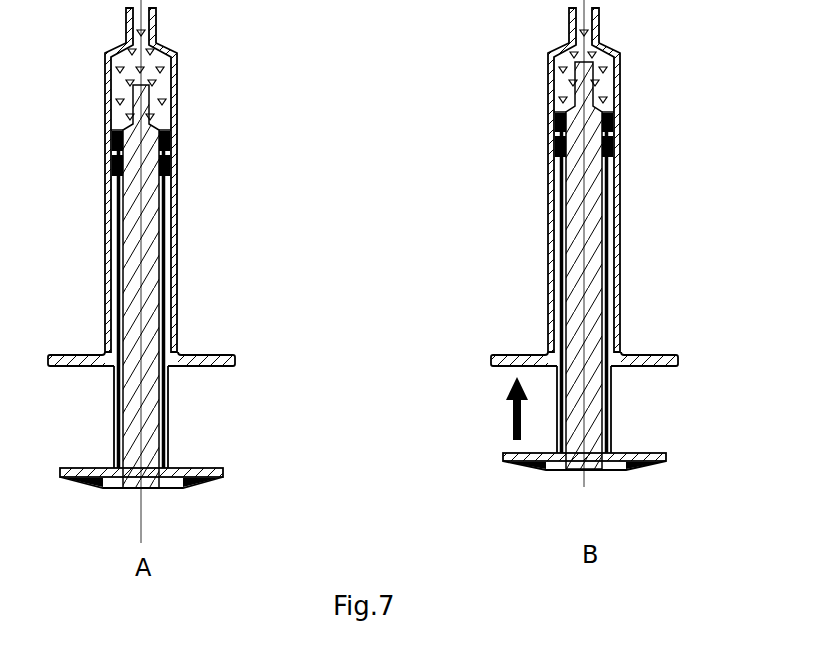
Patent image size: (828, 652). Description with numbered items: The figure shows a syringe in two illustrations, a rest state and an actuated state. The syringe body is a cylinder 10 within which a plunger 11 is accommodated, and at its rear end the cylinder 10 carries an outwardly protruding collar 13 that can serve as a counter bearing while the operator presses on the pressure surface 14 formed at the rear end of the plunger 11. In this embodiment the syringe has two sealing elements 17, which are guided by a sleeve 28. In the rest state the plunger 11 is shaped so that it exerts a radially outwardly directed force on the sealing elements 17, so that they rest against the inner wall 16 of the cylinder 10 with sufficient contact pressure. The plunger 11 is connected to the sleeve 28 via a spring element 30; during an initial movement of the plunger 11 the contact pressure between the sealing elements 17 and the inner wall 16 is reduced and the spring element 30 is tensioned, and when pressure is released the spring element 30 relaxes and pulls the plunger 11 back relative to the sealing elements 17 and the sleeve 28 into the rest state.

The cylinder 10 is at (178, 227).
The plunger 11 is at (152, 288).
The collar 13 is at (233, 354).
The pressure surface 14 is at (158, 490).
The inner wall 16 is at (177, 78).
The sealing elements 17 is at (180, 157).
The sleeve 28 is at (168, 408).
The spring element 30 is at (98, 483).